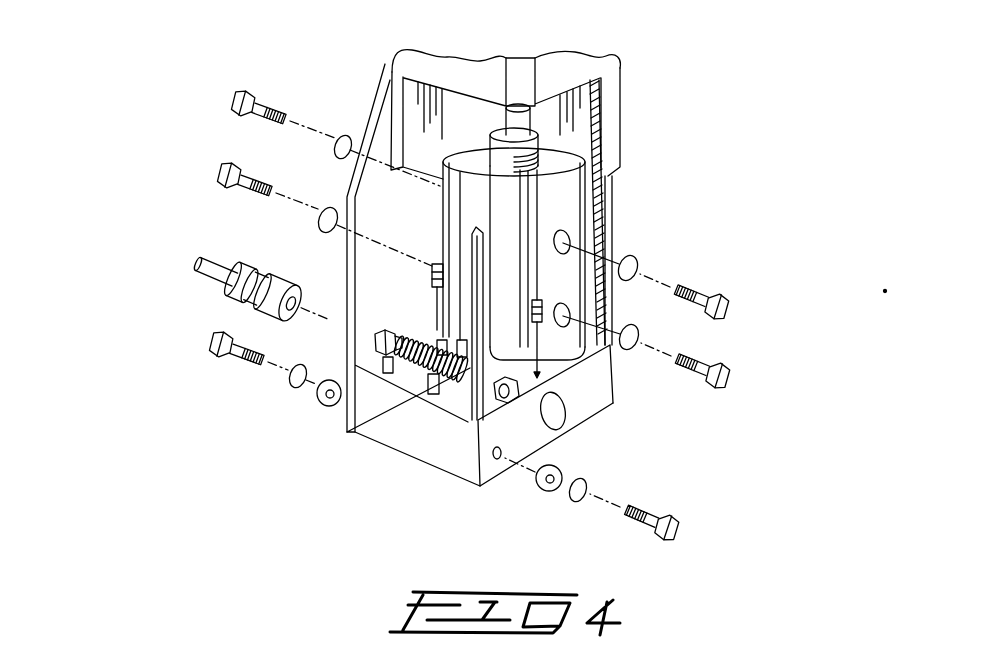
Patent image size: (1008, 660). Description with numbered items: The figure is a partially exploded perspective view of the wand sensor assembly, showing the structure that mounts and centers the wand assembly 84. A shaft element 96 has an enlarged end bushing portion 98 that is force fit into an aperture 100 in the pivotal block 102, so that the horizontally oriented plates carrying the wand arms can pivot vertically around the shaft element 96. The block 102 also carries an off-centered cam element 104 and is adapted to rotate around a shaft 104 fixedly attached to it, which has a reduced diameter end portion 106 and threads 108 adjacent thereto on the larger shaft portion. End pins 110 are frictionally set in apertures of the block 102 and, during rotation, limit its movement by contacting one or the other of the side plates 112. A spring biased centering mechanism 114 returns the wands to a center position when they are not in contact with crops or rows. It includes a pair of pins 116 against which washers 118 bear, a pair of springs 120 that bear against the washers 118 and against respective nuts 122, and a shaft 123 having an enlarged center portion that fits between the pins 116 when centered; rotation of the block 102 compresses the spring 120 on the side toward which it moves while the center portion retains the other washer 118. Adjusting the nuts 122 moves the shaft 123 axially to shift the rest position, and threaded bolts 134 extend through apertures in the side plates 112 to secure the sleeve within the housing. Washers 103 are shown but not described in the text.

The wand assembly 84 is at (679, 134).
The shaft element 96 is at (223, 256).
The enlarged end bushing portion 98 is at (268, 268).
The aperture 100 is at (561, 418).
The pivotal block 102 is at (613, 404).
The washer 103 is at (317, 399).
The shaft 104 is at (548, 218).
The reduced diameter end portion 106 is at (531, 106).
The threads 108 is at (541, 146).
The end pin 110 is at (383, 374).
The side plate 112 is at (361, 243).
The spring biased centering mechanism 114 is at (426, 442).
The pin 116 is at (356, 430).
The washer 118 is at (468, 372).
The spring 120 is at (424, 328).
The nut 122 is at (374, 343).
The shaft 123 is at (503, 405).
The threaded bolt 134 is at (724, 298).